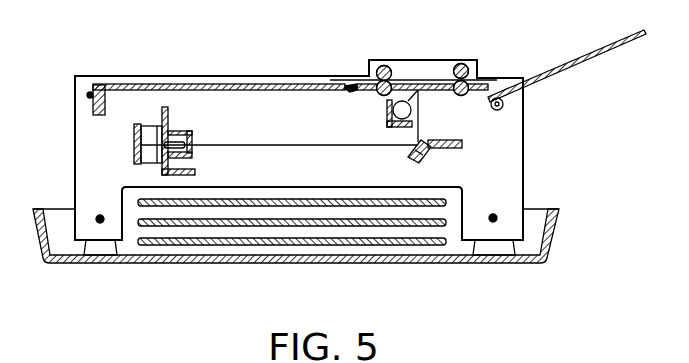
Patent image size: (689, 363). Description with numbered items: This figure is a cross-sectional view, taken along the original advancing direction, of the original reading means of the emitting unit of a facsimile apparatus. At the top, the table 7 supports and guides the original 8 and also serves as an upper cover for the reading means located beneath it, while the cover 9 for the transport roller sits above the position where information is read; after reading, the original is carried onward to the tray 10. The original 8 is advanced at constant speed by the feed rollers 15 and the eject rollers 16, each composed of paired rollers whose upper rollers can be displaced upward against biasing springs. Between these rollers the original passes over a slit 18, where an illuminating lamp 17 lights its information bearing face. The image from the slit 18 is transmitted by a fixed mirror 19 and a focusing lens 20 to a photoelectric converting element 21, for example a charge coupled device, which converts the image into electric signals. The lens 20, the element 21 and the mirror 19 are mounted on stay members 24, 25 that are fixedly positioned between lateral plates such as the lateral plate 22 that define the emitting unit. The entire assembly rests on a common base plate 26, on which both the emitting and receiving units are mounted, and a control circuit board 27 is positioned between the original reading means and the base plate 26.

The table 7 is at (246, 83).
The original 8 is at (347, 79).
The cover for transport roller 9 is at (439, 60).
The tray 10 is at (596, 51).
The feed rollers 15 is at (384, 66).
The eject rollers 16 is at (466, 65).
The illuminating lamp 17 is at (398, 111).
The slit 18 is at (418, 90).
The fixed mirror 19 is at (410, 155).
The focusing lens 20 is at (185, 150).
The photoelectric converting element 21 is at (135, 143).
The lateral plate 22 is at (518, 115).
The stay member 24 is at (170, 109).
The stay member 25 is at (462, 150).
The common base plate 26 is at (558, 214).
The control circuit board 27 is at (332, 199).